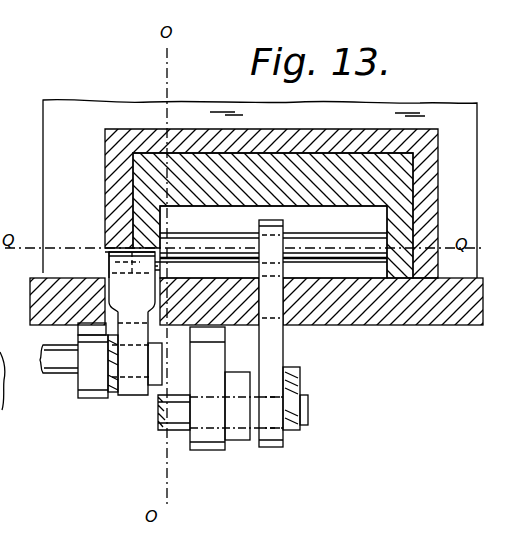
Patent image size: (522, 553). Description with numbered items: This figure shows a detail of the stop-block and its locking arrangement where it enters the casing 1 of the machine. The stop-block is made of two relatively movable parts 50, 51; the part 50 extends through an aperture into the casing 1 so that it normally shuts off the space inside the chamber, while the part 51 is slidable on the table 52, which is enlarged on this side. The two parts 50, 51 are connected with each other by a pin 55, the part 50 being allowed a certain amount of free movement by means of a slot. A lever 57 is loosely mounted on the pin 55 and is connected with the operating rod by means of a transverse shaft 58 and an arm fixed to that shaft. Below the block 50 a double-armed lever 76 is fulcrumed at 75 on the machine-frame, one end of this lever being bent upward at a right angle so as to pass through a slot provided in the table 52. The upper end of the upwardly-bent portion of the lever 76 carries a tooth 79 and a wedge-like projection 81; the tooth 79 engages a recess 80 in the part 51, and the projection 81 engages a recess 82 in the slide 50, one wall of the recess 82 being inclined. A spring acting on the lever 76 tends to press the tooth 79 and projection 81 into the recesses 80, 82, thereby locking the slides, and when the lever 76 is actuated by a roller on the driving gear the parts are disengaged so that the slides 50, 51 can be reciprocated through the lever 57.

The casing 1 is at (52, 160).
The part of stop-block 50 is at (199, 200).
The part of stop-block 51 is at (112, 207).
The table 52 is at (38, 272).
The pin 55 is at (273, 247).
The lever 57 is at (283, 228).
The transverse shaft 58 is at (178, 418).
The fulcrum 75 is at (82, 378).
The double-armed lever 76 is at (138, 304).
The tooth 79 is at (109, 256).
The recess 80 is at (105, 258).
The wedge-like projection 81 is at (273, 248).
The recess 82 is at (163, 256).